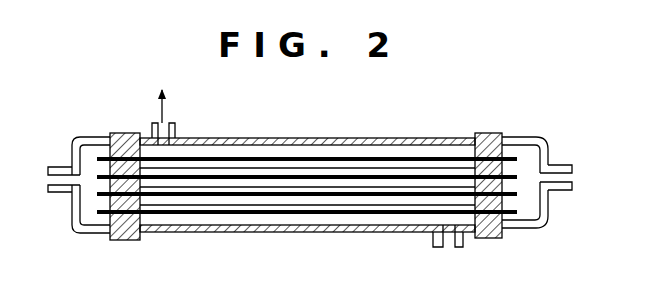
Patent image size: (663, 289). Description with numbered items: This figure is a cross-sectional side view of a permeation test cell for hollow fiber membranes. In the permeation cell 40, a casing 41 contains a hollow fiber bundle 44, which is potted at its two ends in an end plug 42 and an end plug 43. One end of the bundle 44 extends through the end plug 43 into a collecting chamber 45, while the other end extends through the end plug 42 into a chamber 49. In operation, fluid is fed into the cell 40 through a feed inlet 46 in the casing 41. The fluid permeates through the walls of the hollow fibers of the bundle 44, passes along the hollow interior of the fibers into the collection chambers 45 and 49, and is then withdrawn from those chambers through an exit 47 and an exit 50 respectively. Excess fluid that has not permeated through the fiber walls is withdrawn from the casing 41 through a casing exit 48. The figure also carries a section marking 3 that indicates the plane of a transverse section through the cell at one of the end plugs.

The permeation cell 40 is at (287, 233).
The casing 41 is at (409, 138).
The end plug 42 is at (118, 133).
The end plug 43 is at (500, 134).
The hollow fiber bundle 44 is at (162, 160).
The collecting chamber 45 is at (528, 152).
The feed inlet 46 is at (438, 242).
The exit 47 is at (572, 176).
The casing exit 48 is at (178, 131).
The chamber 49 is at (85, 153).
The exit 50 is at (56, 192).
The section line 3- 3 is at (527, 94).